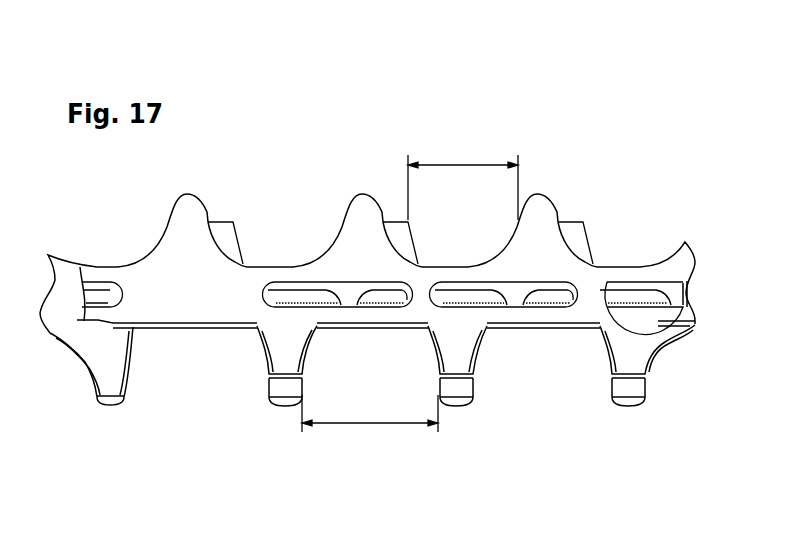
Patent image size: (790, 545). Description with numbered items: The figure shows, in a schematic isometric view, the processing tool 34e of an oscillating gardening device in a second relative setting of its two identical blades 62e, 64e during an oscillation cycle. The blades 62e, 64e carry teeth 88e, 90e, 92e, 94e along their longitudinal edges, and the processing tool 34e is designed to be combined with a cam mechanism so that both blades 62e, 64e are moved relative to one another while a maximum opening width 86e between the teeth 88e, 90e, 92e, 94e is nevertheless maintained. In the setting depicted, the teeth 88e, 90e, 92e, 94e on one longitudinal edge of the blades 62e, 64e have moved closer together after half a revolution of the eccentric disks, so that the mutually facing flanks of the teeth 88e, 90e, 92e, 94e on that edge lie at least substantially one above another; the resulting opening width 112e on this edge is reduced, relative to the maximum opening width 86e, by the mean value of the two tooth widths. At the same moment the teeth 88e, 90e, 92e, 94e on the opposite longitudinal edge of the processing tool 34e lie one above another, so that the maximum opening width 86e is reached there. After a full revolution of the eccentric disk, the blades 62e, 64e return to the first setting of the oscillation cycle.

The processing tool 34e is at (193, 388).
The tooth 90e is at (224, 232).
The tooth 92e is at (368, 207).
The blade 64e is at (543, 207).
The opening width 112e is at (465, 165).
The tooth 88e is at (112, 380).
The blade 62e is at (490, 327).
The tooth 94e is at (623, 358).
The maximum opening width 86e is at (372, 423).